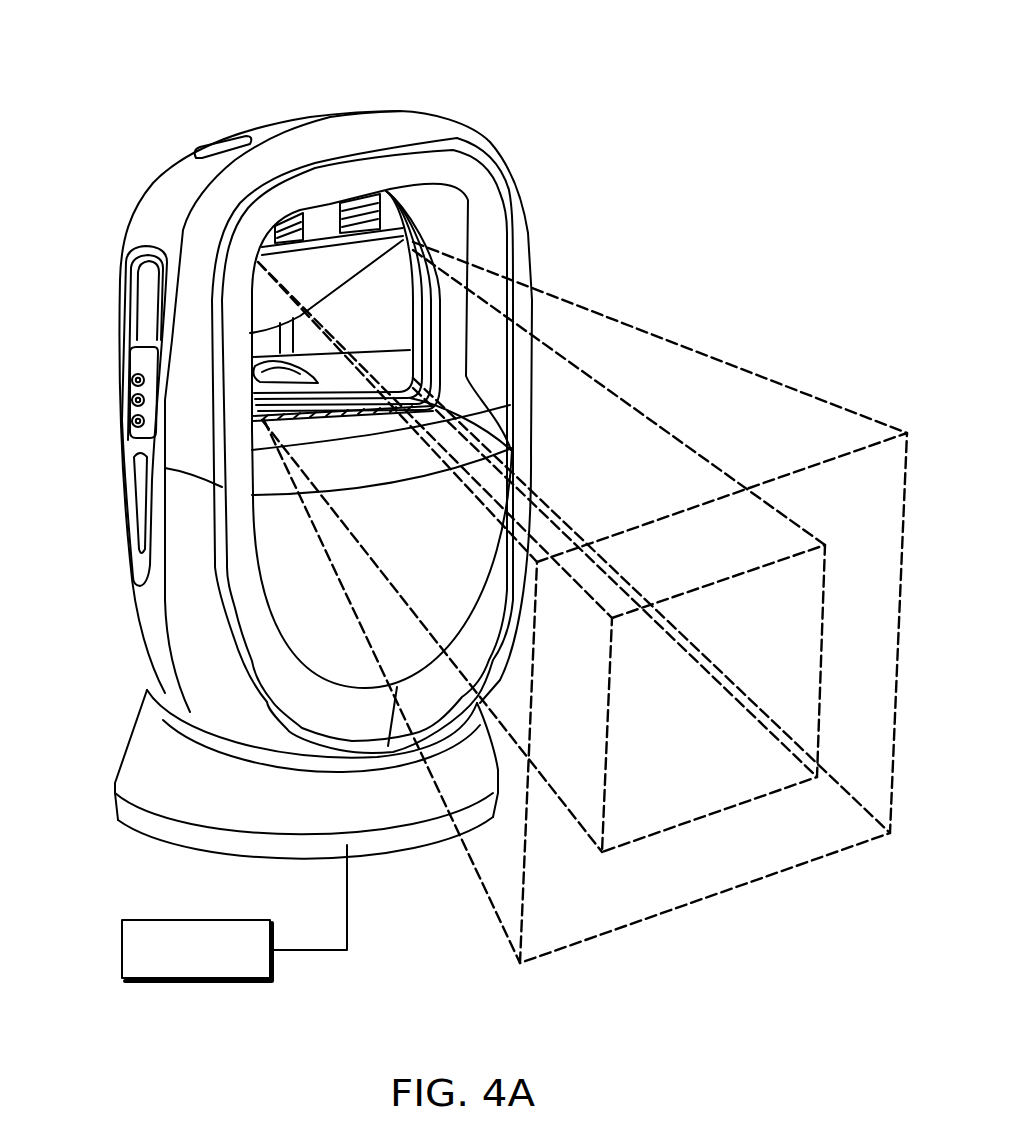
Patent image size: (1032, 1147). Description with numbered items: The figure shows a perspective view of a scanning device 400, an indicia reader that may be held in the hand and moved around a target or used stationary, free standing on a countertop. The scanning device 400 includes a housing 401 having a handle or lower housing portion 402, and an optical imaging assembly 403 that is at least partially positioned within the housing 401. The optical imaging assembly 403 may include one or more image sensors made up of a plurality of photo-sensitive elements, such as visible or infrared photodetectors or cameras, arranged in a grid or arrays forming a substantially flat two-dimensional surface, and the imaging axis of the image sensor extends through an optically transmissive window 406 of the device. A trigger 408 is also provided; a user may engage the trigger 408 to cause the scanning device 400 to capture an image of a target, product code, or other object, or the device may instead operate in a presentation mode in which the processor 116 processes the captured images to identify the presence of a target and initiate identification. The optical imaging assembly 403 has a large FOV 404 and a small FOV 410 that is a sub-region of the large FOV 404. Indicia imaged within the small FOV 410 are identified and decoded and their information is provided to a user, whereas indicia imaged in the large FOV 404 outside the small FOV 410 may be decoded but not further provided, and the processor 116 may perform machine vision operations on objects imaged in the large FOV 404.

The scanning device 400 is at (129, 57).
The housing 401 is at (190, 645).
The lower housing portion 402 is at (198, 702).
The optical imaging assembly 403 is at (412, 352).
The large FOV 404 is at (716, 357).
The optically transmissive window 406 is at (401, 215).
The trigger 408 is at (133, 403).
The small FOV 410 is at (602, 852).
The processor 116 is at (122, 955).